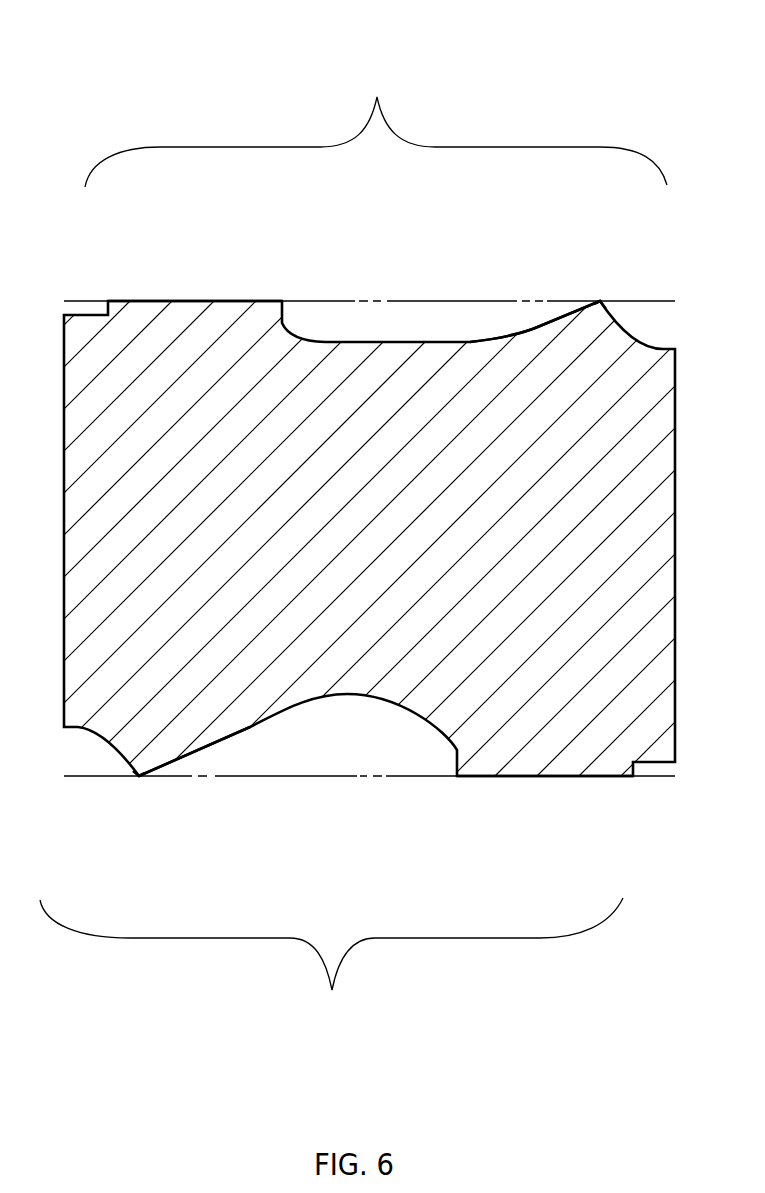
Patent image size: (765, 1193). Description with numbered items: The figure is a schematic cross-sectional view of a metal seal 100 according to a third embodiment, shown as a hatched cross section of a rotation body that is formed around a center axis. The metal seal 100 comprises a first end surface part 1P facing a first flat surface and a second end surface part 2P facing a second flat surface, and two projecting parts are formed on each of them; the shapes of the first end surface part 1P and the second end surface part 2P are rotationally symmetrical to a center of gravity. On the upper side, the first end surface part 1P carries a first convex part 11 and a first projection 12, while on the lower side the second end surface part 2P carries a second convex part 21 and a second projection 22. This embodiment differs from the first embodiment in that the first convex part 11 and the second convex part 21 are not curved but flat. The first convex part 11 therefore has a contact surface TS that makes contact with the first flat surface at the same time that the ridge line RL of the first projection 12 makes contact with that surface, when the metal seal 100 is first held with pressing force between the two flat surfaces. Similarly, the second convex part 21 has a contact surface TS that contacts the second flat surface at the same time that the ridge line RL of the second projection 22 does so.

The metal seal 100 is at (581, 124).
The first end surface part 1P is at (376, 122).
The second end surface part 2P is at (331, 959).
The first convex part 11 is at (217, 290).
The first projection 12 is at (569, 298).
The second convex part 21 is at (520, 790).
The second projection 22 is at (216, 781).
The contact surface TS is at (190, 300).
The ridge line RL is at (600, 300).